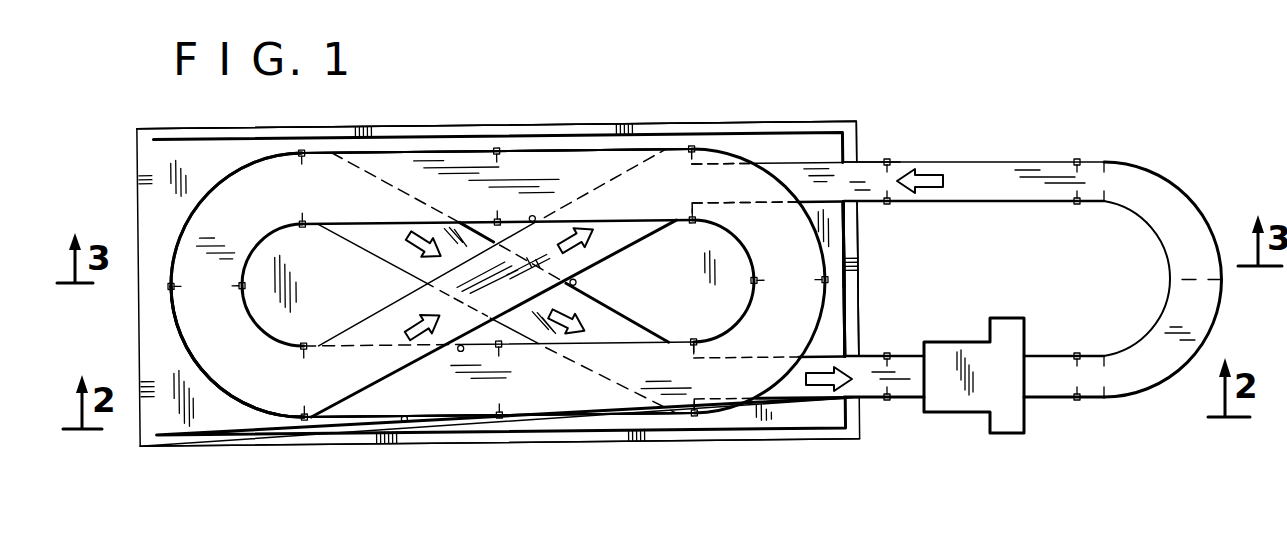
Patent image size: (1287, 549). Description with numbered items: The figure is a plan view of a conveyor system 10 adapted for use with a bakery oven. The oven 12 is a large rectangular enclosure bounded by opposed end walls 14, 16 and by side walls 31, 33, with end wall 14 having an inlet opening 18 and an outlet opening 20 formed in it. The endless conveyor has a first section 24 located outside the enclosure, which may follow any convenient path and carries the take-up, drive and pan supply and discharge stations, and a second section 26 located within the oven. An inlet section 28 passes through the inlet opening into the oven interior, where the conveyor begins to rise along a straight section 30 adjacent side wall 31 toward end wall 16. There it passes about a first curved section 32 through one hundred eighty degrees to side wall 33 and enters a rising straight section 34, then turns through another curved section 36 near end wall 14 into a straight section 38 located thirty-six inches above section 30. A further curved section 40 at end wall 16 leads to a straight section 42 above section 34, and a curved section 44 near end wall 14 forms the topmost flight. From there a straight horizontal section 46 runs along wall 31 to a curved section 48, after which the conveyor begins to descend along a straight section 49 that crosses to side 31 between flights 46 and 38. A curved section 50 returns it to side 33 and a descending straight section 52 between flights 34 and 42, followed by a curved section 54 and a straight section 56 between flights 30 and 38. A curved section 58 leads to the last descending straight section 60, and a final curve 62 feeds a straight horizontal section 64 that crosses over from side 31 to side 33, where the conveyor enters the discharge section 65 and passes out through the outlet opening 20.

The conveyor system 10 is at (957, 133).
The oven 12 is at (817, 440).
The end wall 14 is at (860, 267).
The end wall 16 is at (138, 330).
The inlet opening 18 is at (860, 162).
The outlet opening 20 is at (863, 403).
The first section 24 is at (1007, 160).
The second section 26 is at (785, 148).
The inlet section 28 is at (825, 162).
The straight section 30 is at (547, 104).
The side wall 31 is at (440, 127).
The first curved section 32 is at (191, 219).
The side wall 33 is at (392, 438).
The straight section 34 is at (511, 452).
The curved section 36 is at (860, 228).
The straight section 38 is at (504, 104).
The curved section 40 is at (185, 351).
The straight section 42 is at (540, 443).
The curved section 44 is at (860, 297).
The straight horizontal section 46 is at (578, 150).
The curved section 48 is at (184, 338).
The straight section 49 is at (377, 307).
The curved section 50 is at (857, 320).
The straight section 52 is at (499, 452).
The curved section 54 is at (185, 230).
The straight section 56 is at (527, 104).
The curved section 58 is at (938, 243).
The straight section 60 is at (530, 452).
The curve 62 is at (173, 264).
The straight horizontal section 64 is at (497, 282).
The discharge section 65 is at (803, 402).